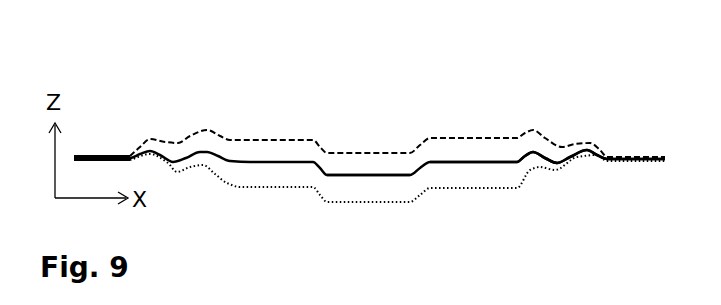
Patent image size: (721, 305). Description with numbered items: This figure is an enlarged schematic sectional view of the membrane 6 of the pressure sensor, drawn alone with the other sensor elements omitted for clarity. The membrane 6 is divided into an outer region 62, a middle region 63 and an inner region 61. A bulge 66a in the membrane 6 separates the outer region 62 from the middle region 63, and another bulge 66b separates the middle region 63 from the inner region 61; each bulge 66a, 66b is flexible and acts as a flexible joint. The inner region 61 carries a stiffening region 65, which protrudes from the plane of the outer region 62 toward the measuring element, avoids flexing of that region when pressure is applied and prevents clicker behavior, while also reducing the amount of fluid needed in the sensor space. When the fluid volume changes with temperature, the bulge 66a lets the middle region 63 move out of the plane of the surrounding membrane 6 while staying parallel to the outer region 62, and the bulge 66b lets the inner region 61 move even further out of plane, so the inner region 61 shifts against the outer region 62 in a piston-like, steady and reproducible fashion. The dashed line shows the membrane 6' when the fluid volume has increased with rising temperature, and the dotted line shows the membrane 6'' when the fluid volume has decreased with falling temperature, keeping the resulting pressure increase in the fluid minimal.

The membrane 6 is at (369, 117).
The membrane at increased fluid volume 6' is at (369, 89).
The membrane at decreased fluid volume 6'' is at (369, 214).
The stiffening region 65 is at (362, 168).
The inner region 61 is at (467, 157).
The bulge 66b is at (532, 157).
The middle region 63 is at (565, 163).
The bulge 66a is at (593, 148).
The outer region 62 is at (635, 157).